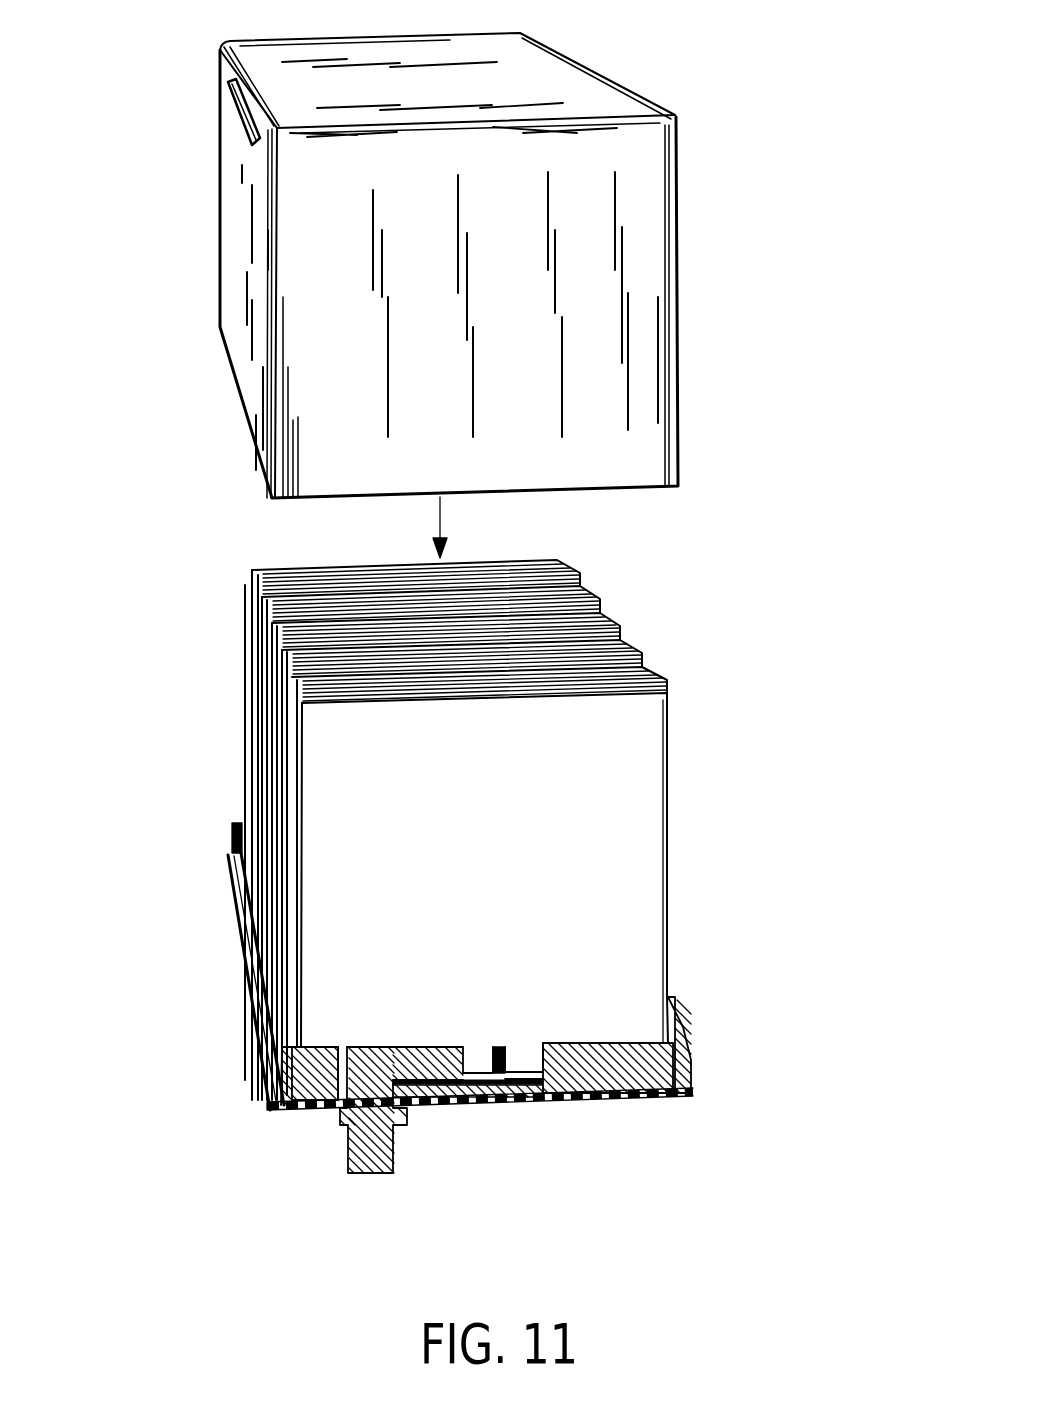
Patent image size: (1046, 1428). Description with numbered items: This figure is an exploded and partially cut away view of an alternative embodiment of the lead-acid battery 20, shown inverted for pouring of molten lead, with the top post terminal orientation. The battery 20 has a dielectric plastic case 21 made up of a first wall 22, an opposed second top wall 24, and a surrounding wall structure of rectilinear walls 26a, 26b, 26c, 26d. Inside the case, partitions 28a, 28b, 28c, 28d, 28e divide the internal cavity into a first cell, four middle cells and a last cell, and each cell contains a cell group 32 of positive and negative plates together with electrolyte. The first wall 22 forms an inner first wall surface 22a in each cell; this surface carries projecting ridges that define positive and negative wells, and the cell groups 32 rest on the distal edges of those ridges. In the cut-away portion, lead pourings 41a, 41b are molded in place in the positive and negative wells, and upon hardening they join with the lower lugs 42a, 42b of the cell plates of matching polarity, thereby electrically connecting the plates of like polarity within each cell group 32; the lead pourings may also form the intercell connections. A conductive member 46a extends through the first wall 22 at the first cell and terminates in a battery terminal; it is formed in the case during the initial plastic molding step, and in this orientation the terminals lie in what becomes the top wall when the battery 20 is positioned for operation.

The battery 20 is at (183, 560).
The dielectric plastic case 21 is at (633, 185).
The first wall 22 is at (660, 1110).
The inner first wall surface 22a is at (613, 1107).
The second top wall 24 is at (527, 78).
The surrounding wall 26a is at (245, 205).
The surrounding wall 26b is at (680, 257).
The surrounding wall 26c is at (219, 78).
The surrounding wall 26d is at (605, 325).
The partition 28a is at (670, 697).
The partition 28b is at (640, 660).
The partition 28c is at (615, 620).
The partition 28d is at (600, 592).
The partition 28e is at (585, 567).
The cell group 32 is at (612, 678).
The lead pouring 41a is at (427, 1113).
The lead pouring 41b is at (493, 1107).
The lower lug 42a is at (477, 1047).
The lower lug 42b is at (530, 1047).
The conductive member 46a is at (367, 1173).